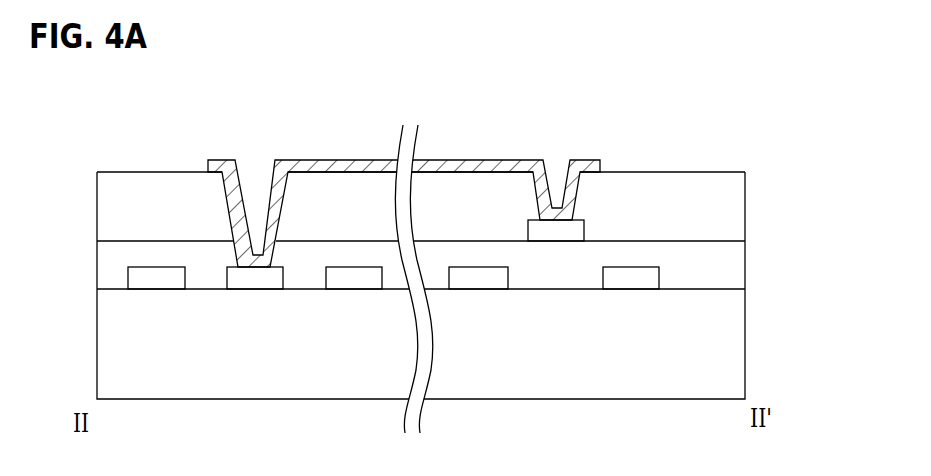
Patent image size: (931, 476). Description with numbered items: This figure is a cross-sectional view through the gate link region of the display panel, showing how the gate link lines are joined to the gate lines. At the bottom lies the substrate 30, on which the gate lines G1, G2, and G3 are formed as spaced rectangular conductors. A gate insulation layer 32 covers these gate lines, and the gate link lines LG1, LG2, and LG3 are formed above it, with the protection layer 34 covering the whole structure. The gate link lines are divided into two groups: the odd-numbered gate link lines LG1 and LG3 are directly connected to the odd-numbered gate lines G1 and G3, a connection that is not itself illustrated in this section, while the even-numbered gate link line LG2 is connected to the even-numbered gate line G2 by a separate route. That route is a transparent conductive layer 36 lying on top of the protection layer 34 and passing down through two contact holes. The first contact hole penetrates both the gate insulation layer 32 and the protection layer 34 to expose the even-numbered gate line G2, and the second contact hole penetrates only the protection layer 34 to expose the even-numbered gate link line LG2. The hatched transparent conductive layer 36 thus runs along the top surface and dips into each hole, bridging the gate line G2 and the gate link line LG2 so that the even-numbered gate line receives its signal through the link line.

The substrate 30 is at (740, 333).
The gate insulation layer 32 is at (737, 267).
The protection layer 34 is at (737, 208).
The transparent conductive layer 36 is at (500, 160).
The odd-numbered gate line G1 is at (150, 280).
The even-numbered gate line G2 is at (252, 280).
The odd-numbered gate line G3 is at (348, 280).
The odd-numbered gate link line LG1 is at (632, 295).
The even-numbered gate link line LG2 is at (556, 247).
The odd-numbered gate link line LG3 is at (478, 295).